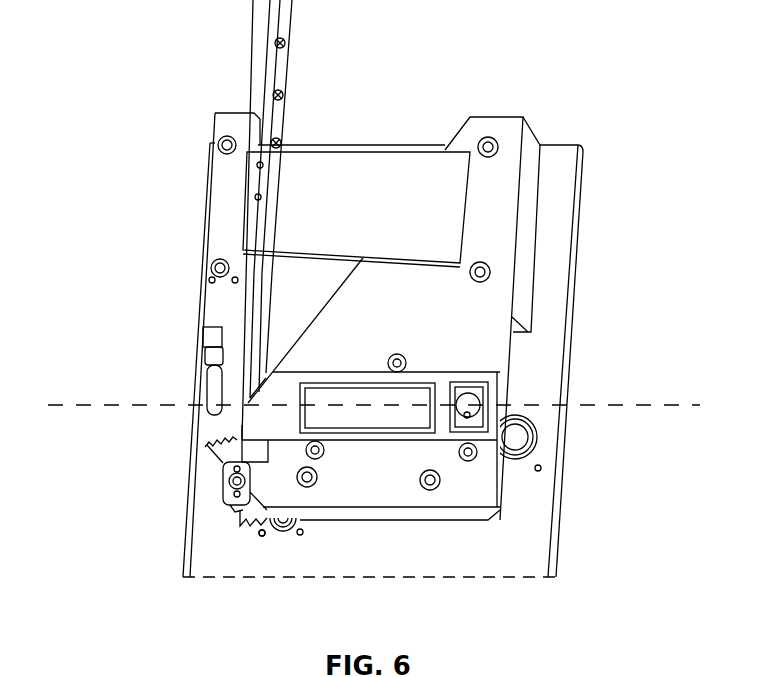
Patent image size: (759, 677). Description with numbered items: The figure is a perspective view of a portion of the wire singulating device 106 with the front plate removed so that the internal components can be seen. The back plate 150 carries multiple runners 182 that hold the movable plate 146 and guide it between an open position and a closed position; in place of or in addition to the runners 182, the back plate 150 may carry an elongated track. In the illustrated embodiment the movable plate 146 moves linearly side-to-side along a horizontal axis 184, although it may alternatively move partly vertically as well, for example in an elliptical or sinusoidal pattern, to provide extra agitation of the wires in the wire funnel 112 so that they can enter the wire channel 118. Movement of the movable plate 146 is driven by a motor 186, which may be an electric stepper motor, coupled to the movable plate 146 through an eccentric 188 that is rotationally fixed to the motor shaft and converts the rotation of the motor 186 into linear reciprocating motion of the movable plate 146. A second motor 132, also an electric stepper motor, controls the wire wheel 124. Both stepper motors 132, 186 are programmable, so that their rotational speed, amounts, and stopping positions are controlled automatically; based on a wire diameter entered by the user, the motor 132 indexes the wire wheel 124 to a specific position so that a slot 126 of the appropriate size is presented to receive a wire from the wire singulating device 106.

The wire singulating device 106 is at (545, 42).
The wire funnel 112 is at (283, 328).
The wire channel 118 is at (232, 428).
The wire wheel 124 is at (250, 513).
The slot 126 is at (247, 532).
The motor 132 is at (279, 516).
The movable plate 146 is at (277, 395).
The back plate 150 is at (460, 290).
The runners 182 is at (406, 362).
The horizontal axis 184 is at (112, 404).
The motor 186 is at (507, 437).
The eccentric 188 is at (470, 402).